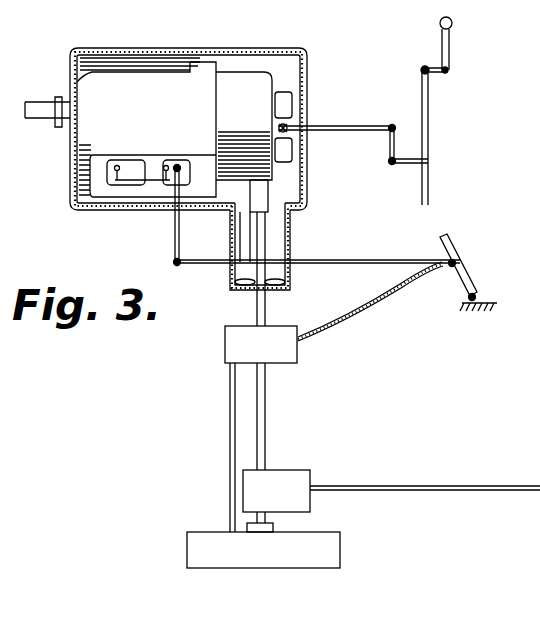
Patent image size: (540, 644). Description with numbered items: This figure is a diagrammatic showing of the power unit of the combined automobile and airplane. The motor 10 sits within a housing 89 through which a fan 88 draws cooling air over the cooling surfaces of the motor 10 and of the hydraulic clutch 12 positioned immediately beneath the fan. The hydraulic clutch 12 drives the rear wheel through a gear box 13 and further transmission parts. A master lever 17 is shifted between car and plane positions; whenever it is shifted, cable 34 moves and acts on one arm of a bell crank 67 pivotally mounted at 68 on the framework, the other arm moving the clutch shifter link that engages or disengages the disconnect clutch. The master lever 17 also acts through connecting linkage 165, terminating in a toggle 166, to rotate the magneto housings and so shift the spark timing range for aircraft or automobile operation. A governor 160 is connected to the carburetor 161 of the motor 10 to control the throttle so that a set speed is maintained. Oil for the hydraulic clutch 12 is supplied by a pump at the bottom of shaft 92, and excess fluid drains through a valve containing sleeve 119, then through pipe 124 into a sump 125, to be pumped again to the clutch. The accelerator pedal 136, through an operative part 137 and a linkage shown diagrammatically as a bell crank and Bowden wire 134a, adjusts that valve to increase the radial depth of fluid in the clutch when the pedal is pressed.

The motor 10 is at (148, 78).
The housing 89 is at (307, 64).
The toggle 166 is at (276, 127).
The connecting linkage 165 is at (372, 110).
The bell crank 67 is at (389, 142).
The pivot 68 is at (390, 164).
The cable 34 is at (428, 107).
The master lever 17 is at (452, 42).
The carburetor 161 is at (116, 190).
The governor 160 is at (158, 190).
The operative part 137 is at (351, 259).
The accelerator pedal 136 is at (458, 258).
The cable 134a is at (356, 322).
The fan 88 is at (232, 288).
The shaft 92 is at (267, 310).
The hydraulic clutch 12 is at (219, 342).
The pipe 124 is at (230, 428).
The gear box 13 is at (311, 469).
The sleeve 119 is at (281, 529).
The sump 125 is at (243, 560).